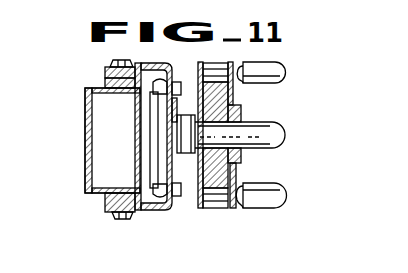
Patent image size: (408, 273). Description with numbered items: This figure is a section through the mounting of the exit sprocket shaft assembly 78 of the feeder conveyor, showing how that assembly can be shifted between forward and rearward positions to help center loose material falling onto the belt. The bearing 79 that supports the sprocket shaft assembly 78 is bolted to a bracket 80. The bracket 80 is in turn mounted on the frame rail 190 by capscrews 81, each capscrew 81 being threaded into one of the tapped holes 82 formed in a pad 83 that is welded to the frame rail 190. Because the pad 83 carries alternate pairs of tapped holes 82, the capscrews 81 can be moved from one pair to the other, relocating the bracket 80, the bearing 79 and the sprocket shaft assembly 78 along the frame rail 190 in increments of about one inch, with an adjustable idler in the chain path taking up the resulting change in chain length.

The exit sprocket shaft assembly 78 is at (286, 69).
The bearing 79 is at (232, 168).
The bracket 80 is at (167, 212).
The capscrew 81 is at (112, 60).
The tapped hole 82 is at (112, 88).
The pad 83 is at (107, 77).
The frame rail 190 is at (88, 121).